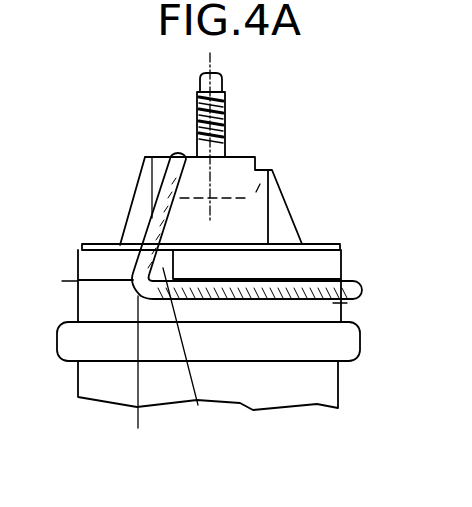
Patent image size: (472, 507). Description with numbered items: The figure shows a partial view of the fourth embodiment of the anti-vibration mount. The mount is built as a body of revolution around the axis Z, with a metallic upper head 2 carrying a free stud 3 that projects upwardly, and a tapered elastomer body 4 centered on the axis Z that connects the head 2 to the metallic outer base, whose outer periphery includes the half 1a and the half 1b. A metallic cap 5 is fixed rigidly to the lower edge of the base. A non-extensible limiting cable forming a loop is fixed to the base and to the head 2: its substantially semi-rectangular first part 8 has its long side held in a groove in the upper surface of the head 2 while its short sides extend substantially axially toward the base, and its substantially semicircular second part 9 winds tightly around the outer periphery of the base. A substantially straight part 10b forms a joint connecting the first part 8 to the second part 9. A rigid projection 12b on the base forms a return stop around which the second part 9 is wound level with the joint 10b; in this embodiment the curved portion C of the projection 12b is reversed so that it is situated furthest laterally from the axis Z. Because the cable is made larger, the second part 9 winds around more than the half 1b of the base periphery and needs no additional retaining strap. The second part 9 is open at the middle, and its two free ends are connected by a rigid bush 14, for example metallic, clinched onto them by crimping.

The axis Z is at (210, 60).
The free stud 3 is at (213, 115).
The upper head 2 is at (235, 178).
The elastomer body 4 is at (225, 232).
The first part of the cable 8 is at (151, 218).
The rigid bush 14 is at (364, 285).
The second part of the cable 9 is at (343, 303).
The right-hand half of the base 1a is at (97, 268).
The half of the outer periphery of the base 1b is at (320, 272).
The curved portion of the projection C is at (60, 288).
The cap 5 is at (115, 380).
The straight part of the cable 10b is at (147, 377).
The rigid projection 12b is at (201, 355).